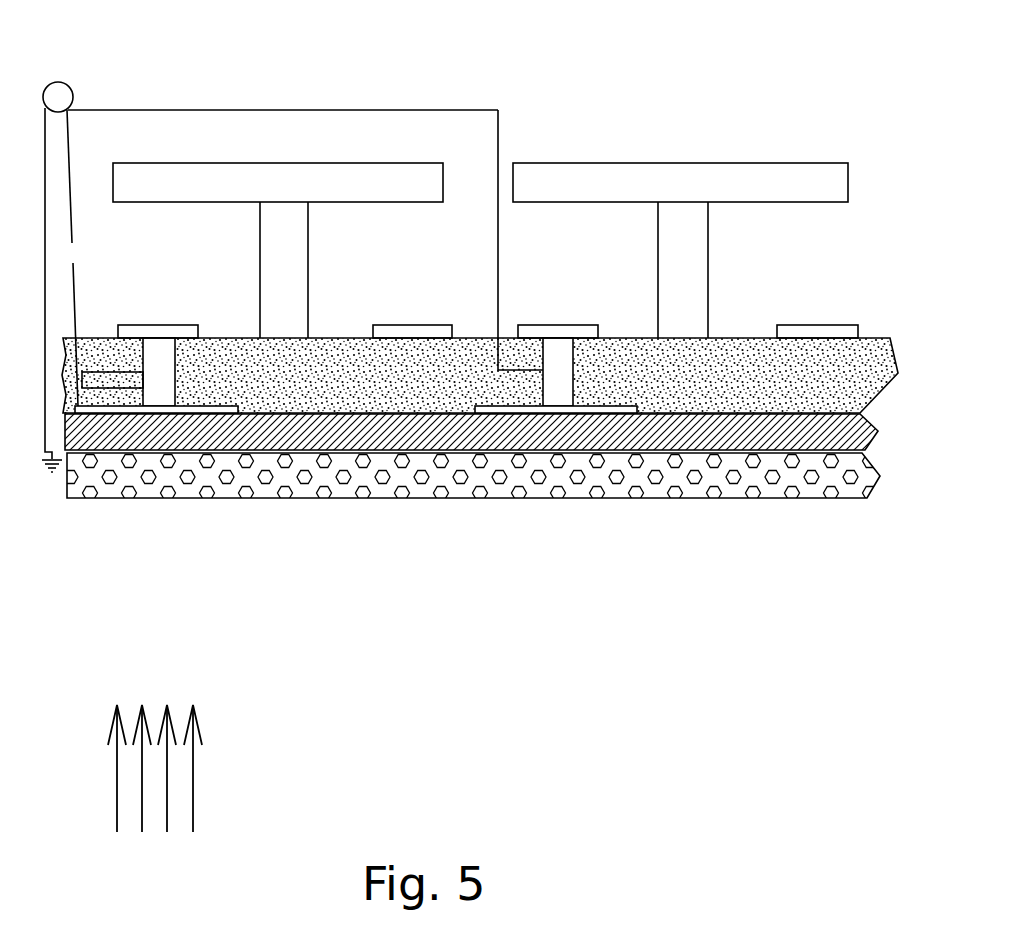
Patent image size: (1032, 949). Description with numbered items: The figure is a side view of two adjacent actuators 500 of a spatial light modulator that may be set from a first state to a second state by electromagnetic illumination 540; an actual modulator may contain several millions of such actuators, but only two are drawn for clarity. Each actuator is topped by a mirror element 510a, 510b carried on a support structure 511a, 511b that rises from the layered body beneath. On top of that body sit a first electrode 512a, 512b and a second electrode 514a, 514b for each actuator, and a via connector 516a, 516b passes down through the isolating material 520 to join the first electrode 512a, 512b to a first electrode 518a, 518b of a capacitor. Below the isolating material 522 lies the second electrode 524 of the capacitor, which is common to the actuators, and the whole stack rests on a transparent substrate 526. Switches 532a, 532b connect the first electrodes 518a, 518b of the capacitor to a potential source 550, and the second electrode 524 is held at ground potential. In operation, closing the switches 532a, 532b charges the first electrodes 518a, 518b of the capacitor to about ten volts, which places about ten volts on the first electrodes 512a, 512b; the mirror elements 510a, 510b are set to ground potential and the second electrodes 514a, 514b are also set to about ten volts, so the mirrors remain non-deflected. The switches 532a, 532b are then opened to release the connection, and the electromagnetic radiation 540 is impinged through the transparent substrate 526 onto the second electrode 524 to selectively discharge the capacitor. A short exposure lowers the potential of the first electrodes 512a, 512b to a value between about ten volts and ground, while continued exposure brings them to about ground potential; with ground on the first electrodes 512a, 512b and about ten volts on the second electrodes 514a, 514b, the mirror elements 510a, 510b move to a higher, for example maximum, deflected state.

The actuator 500 is at (555, 80).
The mirror element 510a is at (278, 131).
The mirror element 510b is at (680, 125).
The support structure 511a is at (367, 270).
The support structure 511b is at (764, 270).
The first electrode 512a is at (168, 289).
The first electrode 512b is at (571, 288).
The second electrode 514a is at (432, 292).
The second electrode 514b is at (842, 294).
The via connector 516a is at (173, 382).
The via connector 516b is at (602, 339).
The first electrode of the capacitor 518a is at (170, 341).
The first electrode of the capacitor 518b is at (625, 354).
The isolating material 520 is at (480, 496).
The isolating material 522 is at (471, 514).
The second electrode of the capacitor 524 is at (465, 523).
The transparent substrate 526 is at (473, 534).
The switch 532a is at (139, 258).
The switch 532b is at (543, 240).
The electromagnetic illumination 540 is at (237, 768).
The potential source 550 is at (270, 241).